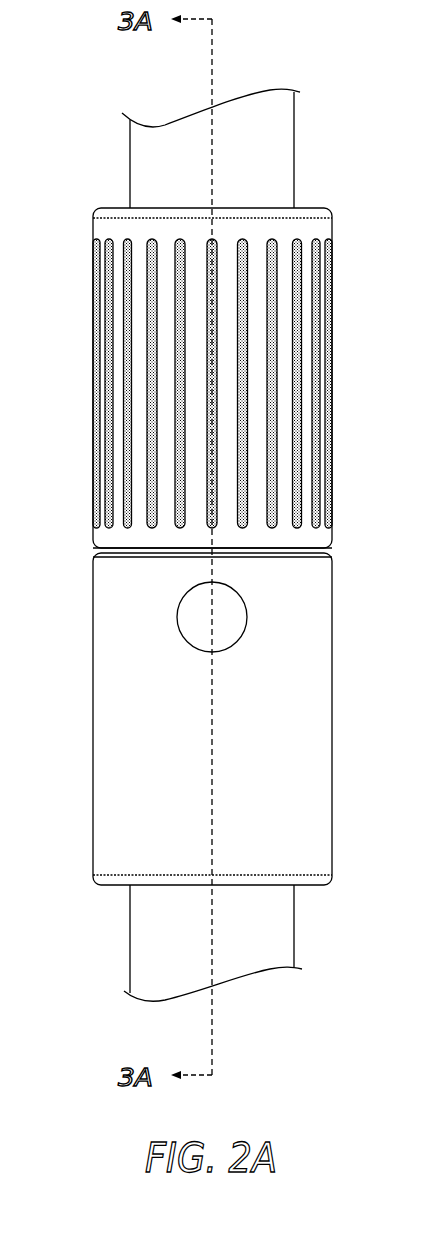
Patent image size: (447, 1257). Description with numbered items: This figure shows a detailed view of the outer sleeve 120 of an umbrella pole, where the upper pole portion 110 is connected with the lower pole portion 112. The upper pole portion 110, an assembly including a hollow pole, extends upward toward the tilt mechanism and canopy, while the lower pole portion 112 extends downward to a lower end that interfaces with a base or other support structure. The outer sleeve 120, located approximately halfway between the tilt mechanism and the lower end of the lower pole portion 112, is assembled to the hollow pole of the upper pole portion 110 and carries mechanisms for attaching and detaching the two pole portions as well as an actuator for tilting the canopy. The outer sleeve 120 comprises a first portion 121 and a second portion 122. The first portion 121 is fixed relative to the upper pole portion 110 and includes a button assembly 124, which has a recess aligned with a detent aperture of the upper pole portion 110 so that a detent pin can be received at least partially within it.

The upper pole portion 110 is at (277, 160).
The lower pole portion 112 is at (294, 925).
The outer sleeve 120 is at (80, 340).
The first portion 121 is at (332, 695).
The second portion 122 is at (314, 392).
The button assembly 124 is at (177, 615).